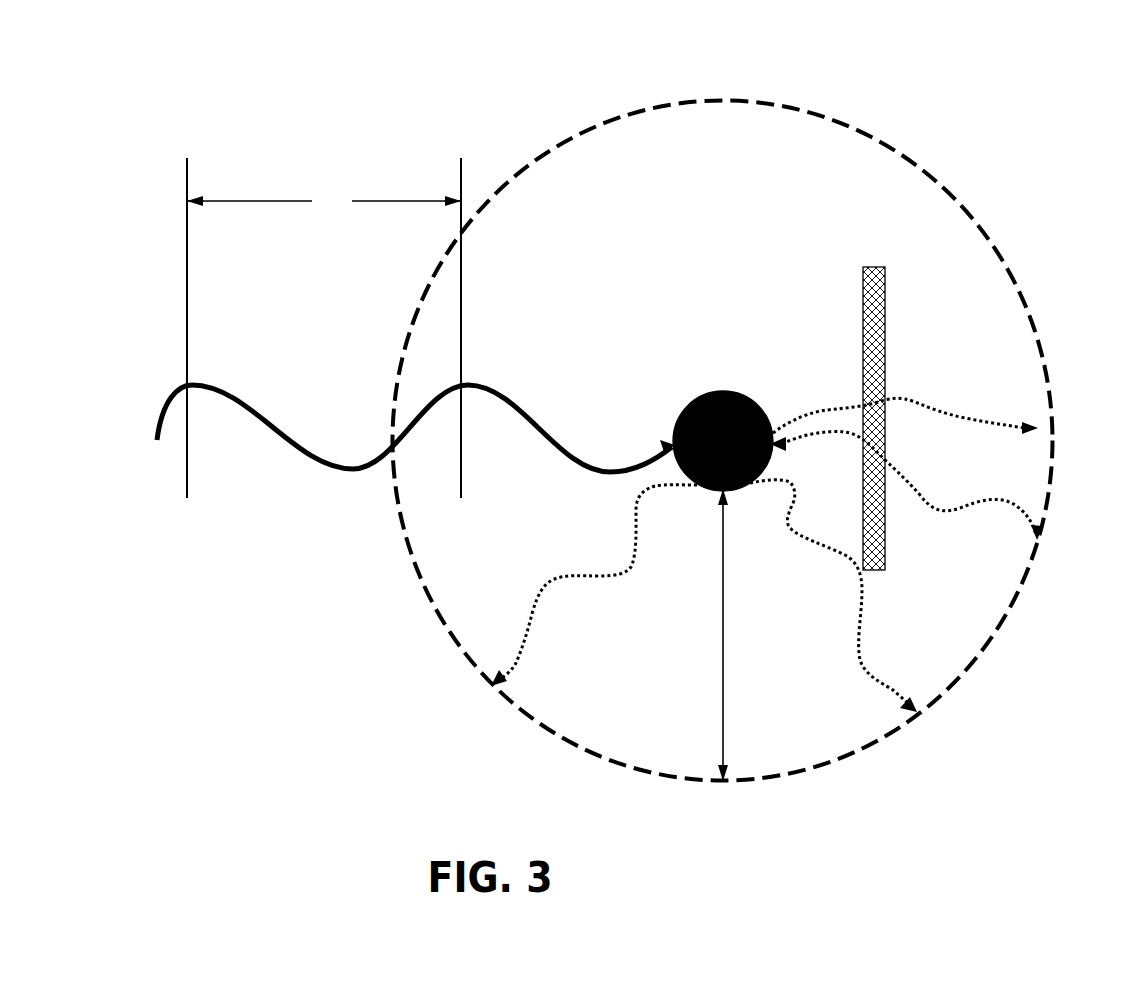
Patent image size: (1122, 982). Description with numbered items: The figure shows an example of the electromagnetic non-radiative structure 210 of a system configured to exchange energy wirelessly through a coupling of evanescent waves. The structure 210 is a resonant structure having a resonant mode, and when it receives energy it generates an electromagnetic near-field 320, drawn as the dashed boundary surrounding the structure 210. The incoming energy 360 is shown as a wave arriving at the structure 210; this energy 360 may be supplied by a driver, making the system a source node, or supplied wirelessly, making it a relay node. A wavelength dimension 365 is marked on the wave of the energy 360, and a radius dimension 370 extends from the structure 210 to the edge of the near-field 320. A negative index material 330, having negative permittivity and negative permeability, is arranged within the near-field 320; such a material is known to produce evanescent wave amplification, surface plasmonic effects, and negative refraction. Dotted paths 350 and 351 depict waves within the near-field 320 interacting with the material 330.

The structure 210 is at (700, 395).
The electromagnetic near-field 320 is at (548, 147).
The negative index material 330 is at (887, 288).
The scattered wave paths 350 is at (942, 412).
The reflected wave path 351 is at (940, 514).
The energy 360 is at (380, 454).
The wavelength dimension 365 is at (337, 158).
The radius of scattering region 370 is at (723, 638).